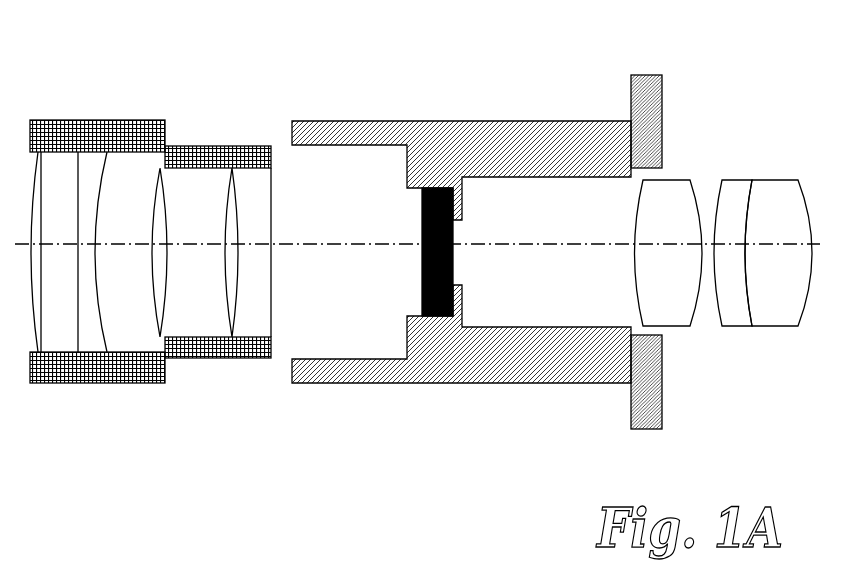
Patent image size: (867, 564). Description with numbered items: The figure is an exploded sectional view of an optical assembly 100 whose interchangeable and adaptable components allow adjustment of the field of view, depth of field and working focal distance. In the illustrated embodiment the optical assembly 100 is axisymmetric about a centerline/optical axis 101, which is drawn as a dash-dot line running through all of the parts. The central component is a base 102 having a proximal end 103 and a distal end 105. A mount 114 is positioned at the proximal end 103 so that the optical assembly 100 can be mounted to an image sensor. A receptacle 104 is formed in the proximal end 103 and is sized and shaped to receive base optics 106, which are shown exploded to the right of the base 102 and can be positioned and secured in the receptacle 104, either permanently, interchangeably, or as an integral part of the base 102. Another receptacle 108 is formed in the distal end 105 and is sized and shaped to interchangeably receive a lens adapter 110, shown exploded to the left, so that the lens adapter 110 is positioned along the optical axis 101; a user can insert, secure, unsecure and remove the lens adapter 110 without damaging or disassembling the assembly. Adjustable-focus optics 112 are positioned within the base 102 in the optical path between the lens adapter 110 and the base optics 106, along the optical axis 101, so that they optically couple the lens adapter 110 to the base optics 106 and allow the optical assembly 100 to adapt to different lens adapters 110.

The optical assembly 100 is at (669, 71).
The centerline/optical axis 101 is at (362, 244).
The base 102 is at (447, 118).
The proximal end 103 is at (681, 113).
The receptacle 104 is at (518, 229).
The distal end 105 is at (288, 387).
The base optics 106 is at (739, 334).
The receptacle 108 is at (330, 219).
The lens adapter 110 is at (130, 388).
The adjustable-focus optics 112 is at (422, 292).
The mount 114 is at (641, 76).